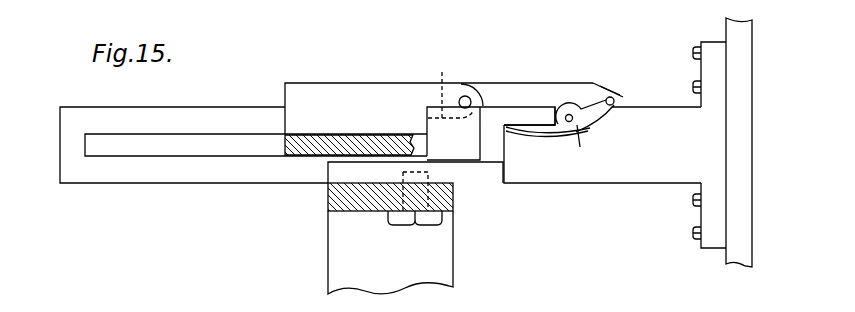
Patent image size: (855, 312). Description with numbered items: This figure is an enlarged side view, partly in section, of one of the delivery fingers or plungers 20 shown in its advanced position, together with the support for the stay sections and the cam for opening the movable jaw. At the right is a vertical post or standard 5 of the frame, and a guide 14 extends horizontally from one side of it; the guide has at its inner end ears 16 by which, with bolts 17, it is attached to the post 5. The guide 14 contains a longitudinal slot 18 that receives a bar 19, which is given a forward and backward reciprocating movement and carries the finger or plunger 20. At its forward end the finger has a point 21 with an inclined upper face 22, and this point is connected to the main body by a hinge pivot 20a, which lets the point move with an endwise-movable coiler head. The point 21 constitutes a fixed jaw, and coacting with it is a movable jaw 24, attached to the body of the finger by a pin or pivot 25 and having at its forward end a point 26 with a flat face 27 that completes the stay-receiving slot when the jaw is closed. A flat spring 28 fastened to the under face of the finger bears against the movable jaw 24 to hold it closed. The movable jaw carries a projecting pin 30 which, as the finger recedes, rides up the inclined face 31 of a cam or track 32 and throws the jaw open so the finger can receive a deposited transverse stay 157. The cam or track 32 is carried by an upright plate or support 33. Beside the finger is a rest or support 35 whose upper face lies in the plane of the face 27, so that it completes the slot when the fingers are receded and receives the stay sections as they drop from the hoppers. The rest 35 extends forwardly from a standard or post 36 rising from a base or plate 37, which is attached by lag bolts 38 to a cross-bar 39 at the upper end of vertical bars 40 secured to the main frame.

The vertical post or standard 5 is at (747, 80).
The guide 14 is at (76, 110).
The ears 16 is at (713, 145).
The bolts 17 is at (693, 87).
The longitudinal slot 18 is at (155, 150).
The bar 19 is at (302, 152).
The finger or plunger 20 is at (439, 108).
The hinge pivot 20a is at (466, 96).
The point 21 is at (641, 95).
The inclined upper face 22 is at (608, 94).
The movable jaw 24 is at (580, 147).
The pin or pivot 25 is at (566, 121).
The point of movable jaw 26 is at (622, 107).
The flat face 27 is at (625, 110).
The flat spring 28 is at (532, 135).
The projecting pin 30 is at (596, 128).
The inclined face 31 is at (482, 81).
The cam or track 32 is at (451, 87).
The upright plate or support 33 is at (491, 133).
The rest or support 35 is at (529, 116).
The standard or post 36 is at (591, 154).
The base or plate 37 is at (415, 173).
The lag bolts 38 is at (443, 220).
The cross-bar 39 is at (453, 201).
The vertical bars 40 is at (390, 252).
The transverse stay 157 is at (614, 99).